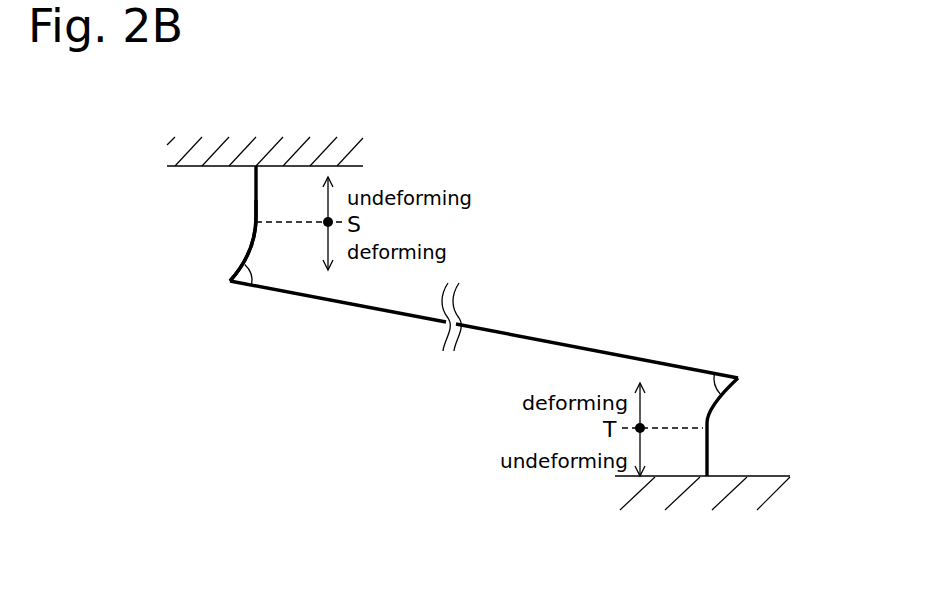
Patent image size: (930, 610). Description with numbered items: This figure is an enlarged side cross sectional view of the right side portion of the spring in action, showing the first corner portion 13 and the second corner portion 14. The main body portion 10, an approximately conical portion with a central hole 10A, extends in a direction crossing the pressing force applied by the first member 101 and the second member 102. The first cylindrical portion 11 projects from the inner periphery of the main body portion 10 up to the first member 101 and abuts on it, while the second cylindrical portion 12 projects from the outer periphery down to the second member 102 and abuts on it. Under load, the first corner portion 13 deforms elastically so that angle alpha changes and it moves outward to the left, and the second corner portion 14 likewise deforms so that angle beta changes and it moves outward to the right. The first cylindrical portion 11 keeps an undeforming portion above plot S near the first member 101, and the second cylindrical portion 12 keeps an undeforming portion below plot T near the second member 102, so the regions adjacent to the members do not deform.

The main body portion 10 is at (340, 298).
The hole 10A is at (225, 188).
The first cylindrical portion 11 is at (256, 208).
The second cylindrical portion 12 is at (708, 452).
The first corner portion 13 is at (230, 280).
The second corner portion 14 is at (710, 373).
The first member 101 is at (283, 152).
The second member 102 is at (703, 497).